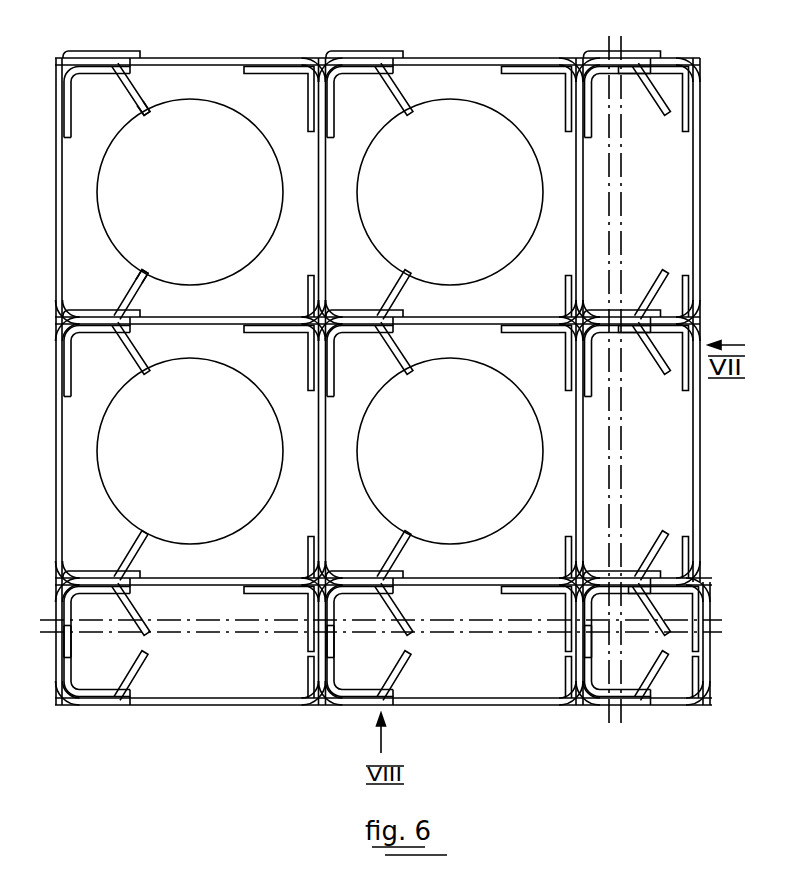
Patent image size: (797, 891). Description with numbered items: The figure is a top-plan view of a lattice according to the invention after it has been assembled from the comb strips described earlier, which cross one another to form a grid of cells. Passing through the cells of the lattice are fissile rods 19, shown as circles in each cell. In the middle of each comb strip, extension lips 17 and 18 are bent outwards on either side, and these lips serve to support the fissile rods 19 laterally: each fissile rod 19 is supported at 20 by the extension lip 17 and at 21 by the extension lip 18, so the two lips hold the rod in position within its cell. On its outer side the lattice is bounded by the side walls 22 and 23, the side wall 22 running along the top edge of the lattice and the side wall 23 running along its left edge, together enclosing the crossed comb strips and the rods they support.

The extension lip 17 is at (143, 95).
The extension lip 18 is at (143, 288).
The fissile rod 19 is at (248, 133).
The support point 20 is at (151, 116).
The support point 21 is at (145, 275).
The side wall 22 is at (198, 57).
The side wall 23 is at (57, 272).